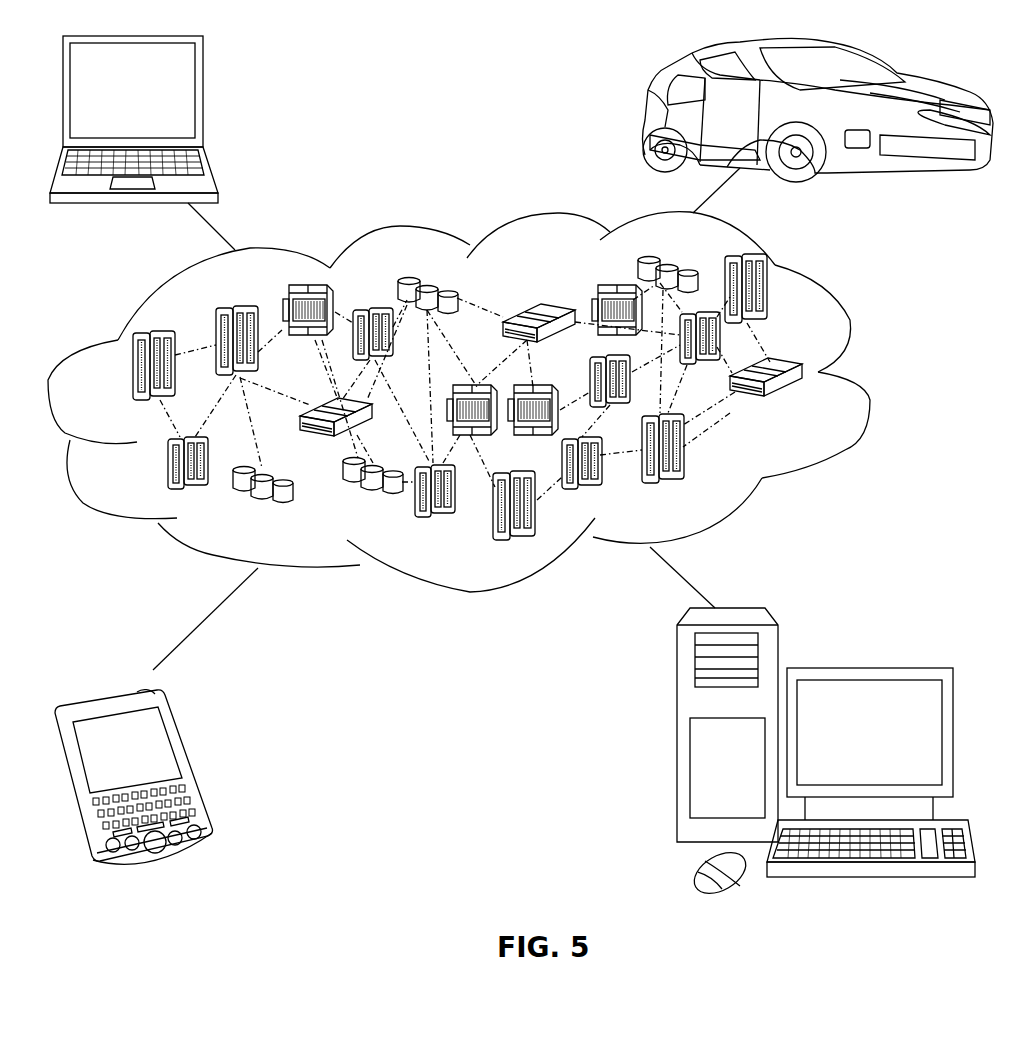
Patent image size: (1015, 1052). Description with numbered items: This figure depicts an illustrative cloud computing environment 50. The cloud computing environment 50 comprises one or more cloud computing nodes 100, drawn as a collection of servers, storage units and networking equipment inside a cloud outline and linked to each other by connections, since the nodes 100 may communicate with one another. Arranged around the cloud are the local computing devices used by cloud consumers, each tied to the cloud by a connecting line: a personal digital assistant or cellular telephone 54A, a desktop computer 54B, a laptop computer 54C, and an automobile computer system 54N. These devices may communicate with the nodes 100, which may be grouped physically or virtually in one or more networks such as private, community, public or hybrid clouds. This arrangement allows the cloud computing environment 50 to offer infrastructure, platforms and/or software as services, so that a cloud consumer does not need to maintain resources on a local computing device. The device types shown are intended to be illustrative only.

The cloud computing environment 50 is at (866, 378).
The cloud computing nodes 100 is at (812, 405).
The personal digital assistant (PDA) or cellular telephone 54A is at (190, 762).
The desktop computer 54B is at (866, 667).
The laptop computer 54C is at (203, 100).
The automobile computer system 54N is at (646, 115).